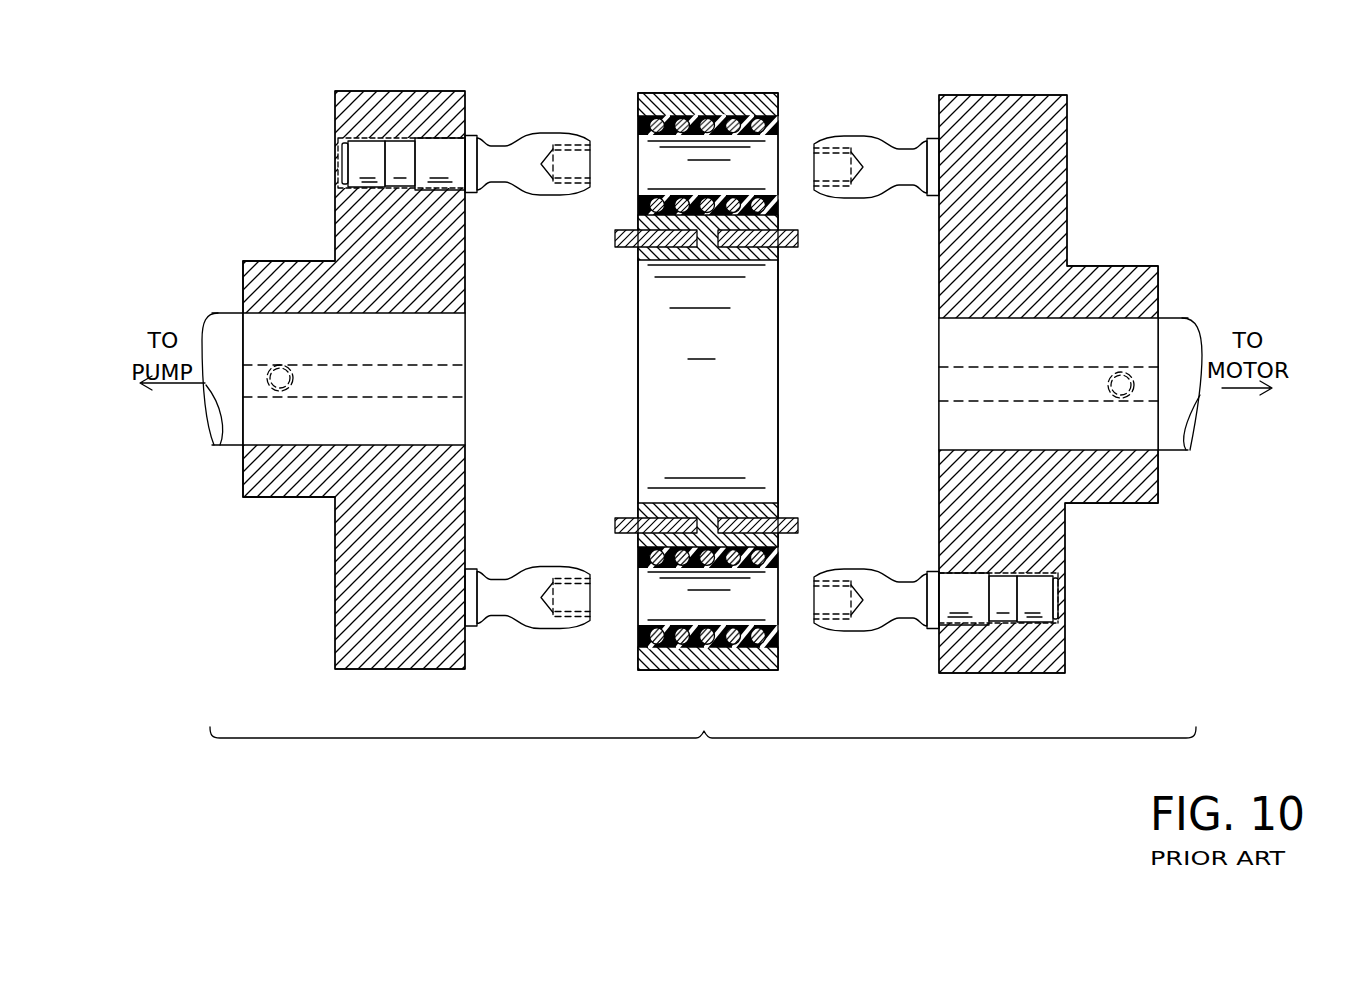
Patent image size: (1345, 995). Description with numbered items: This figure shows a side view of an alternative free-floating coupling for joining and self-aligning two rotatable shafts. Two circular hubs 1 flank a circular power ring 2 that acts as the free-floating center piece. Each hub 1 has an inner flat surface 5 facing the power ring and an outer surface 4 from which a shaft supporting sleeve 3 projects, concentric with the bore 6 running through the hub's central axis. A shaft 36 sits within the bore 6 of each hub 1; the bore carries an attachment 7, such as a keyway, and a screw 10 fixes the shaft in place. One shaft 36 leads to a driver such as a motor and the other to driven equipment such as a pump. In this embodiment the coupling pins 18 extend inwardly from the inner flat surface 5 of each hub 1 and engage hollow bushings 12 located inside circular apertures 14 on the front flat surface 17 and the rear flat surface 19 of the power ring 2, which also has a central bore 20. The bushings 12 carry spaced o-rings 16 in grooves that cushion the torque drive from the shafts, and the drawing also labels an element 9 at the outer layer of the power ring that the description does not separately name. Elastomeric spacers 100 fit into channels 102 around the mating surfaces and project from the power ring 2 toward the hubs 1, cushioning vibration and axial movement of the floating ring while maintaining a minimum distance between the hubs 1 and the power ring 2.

The circular hub 1 is at (394, 91).
The circular power ring 2 is at (703, 408).
The shaft supporting sleeve 3 is at (262, 261).
The outer surface 4 is at (343, 163).
The inner flat surface 5 is at (465, 268).
The bore 6 is at (955, 428).
The attachment 7 is at (950, 383).
The outer race 9 is at (690, 110).
The screw 10 is at (282, 390).
The hollow bushing 12 is at (638, 125).
The circular aperture 14 is at (443, 160).
The o-ring 16 is at (638, 205).
The front flat surface 17 is at (638, 341).
The coupling pin 18 is at (523, 150).
The rear flat surface 19 is at (778, 345).
The central bore 20 is at (655, 400).
The shaft 36 is at (232, 445).
The elastomeric spacer 100 is at (615, 238).
The channel 102 is at (640, 252).